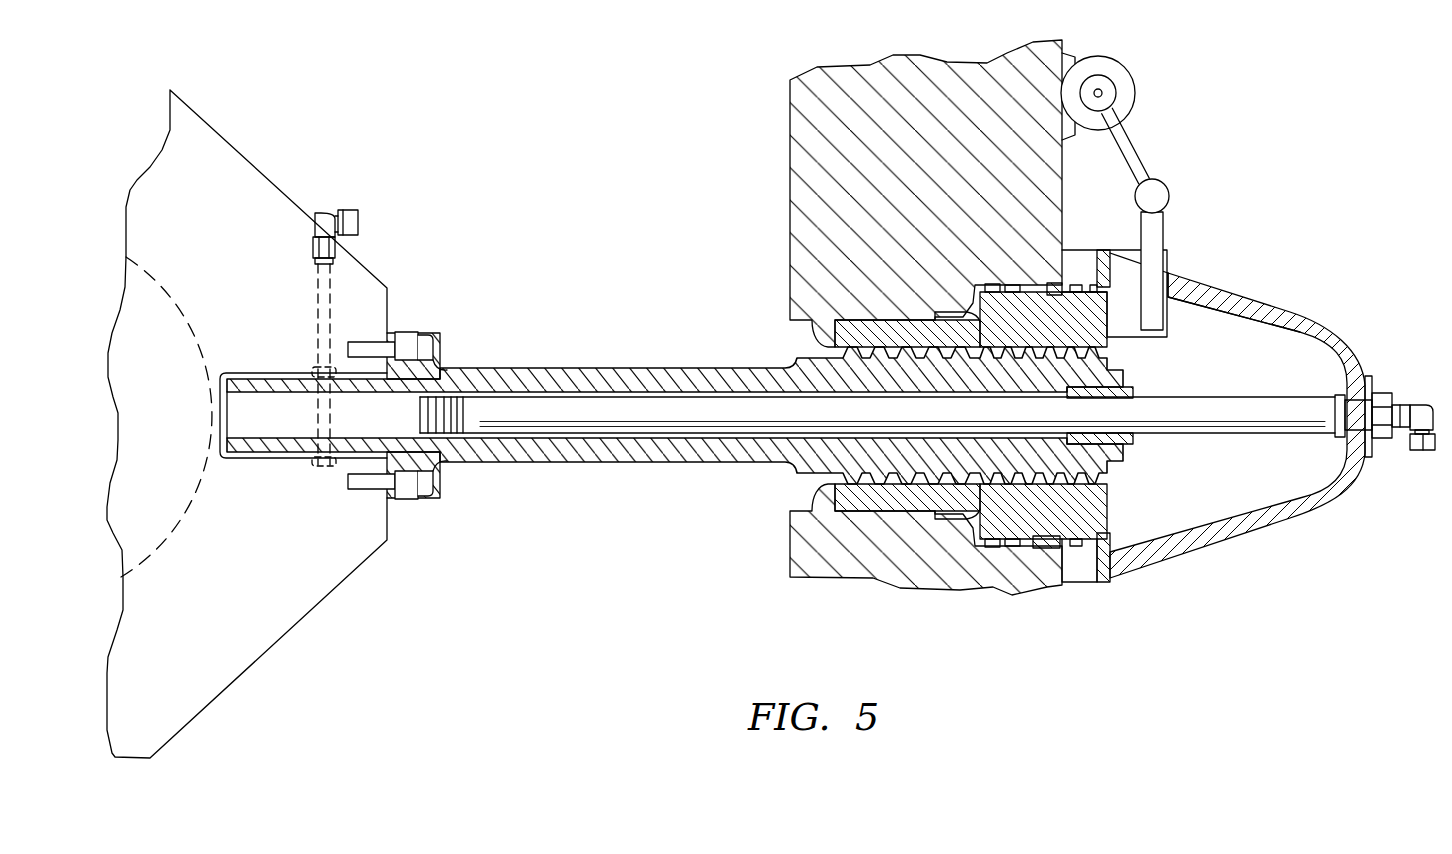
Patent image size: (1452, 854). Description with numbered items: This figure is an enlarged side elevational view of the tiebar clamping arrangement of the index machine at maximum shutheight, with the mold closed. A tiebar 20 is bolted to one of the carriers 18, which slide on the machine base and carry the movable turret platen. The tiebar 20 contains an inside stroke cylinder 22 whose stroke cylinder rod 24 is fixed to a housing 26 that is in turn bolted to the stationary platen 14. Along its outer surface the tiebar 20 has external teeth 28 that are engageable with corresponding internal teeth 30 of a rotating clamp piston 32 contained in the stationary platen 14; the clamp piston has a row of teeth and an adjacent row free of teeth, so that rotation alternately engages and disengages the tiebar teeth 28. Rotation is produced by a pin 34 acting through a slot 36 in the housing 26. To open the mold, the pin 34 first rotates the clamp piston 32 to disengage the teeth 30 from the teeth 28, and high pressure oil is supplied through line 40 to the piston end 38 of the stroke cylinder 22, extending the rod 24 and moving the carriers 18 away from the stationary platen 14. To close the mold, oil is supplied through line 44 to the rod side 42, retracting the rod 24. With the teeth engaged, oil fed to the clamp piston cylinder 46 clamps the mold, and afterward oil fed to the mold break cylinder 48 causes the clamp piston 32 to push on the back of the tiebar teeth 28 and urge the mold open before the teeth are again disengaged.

The stationary platen 14 is at (803, 85).
The carriers 18 is at (247, 188).
The tiebar 20 is at (543, 366).
The stroke cylinder 22 is at (538, 442).
The stroke cylinder rod 24 is at (605, 418).
The housing 26 is at (1233, 292).
The external teeth 28 is at (870, 318).
The internal teeth 30 is at (1023, 288).
The rotating clamp piston 32 is at (993, 283).
The pin 34 is at (1133, 287).
The slot 36 is at (1165, 292).
The piston end 38 is at (397, 408).
The line 40 is at (357, 223).
The rod side 42 is at (1272, 410).
The line 44 is at (1420, 450).
The clamp piston cylinder 46 is at (968, 283).
The mold break cylinder 48 is at (1042, 283).